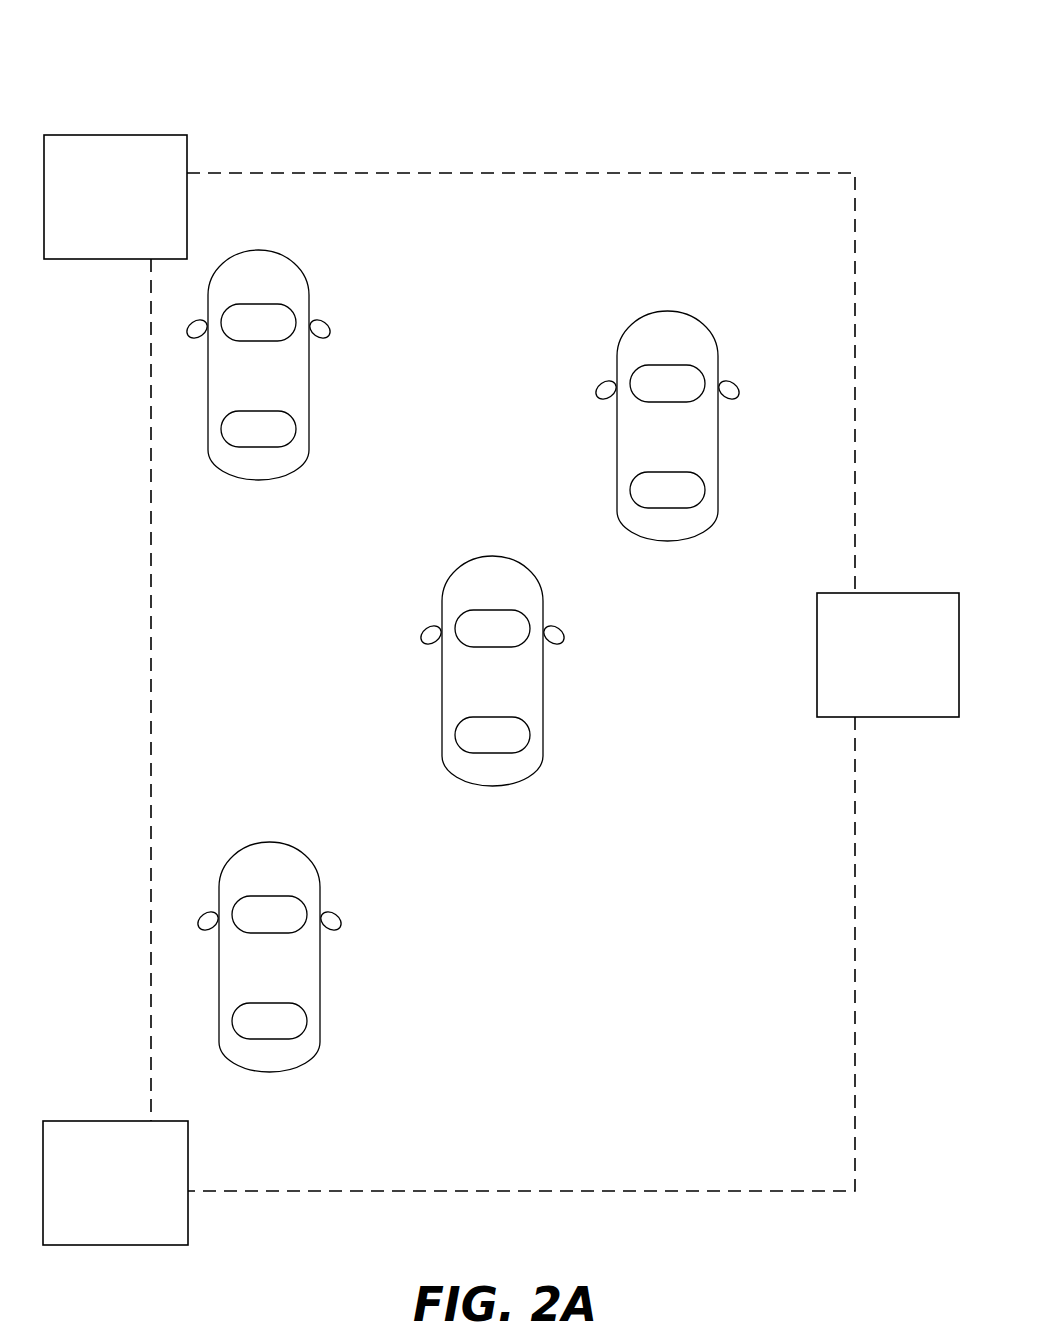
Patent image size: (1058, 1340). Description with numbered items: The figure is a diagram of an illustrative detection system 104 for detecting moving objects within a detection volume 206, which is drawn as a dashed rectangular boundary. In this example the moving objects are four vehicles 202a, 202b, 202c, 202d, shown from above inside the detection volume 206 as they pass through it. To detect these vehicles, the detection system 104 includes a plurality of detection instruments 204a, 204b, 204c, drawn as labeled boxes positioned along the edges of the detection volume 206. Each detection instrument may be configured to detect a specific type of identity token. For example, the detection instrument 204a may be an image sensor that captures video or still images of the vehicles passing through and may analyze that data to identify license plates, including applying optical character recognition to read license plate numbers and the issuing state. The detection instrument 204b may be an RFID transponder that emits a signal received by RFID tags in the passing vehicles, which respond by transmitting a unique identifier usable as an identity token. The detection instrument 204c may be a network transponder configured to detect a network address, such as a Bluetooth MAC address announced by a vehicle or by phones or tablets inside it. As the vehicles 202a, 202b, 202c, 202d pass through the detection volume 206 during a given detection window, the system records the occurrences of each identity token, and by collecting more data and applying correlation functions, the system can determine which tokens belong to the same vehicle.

The detection system 104 is at (258, 117).
The detection volume 206 is at (661, 172).
The detection instrument 204a is at (89, 239).
The detection instrument 204b is at (862, 695).
The detection instrument 204c is at (89, 1222).
The vehicle 202a is at (309, 384).
The vehicle 202b is at (718, 445).
The vehicle 202c is at (543, 690).
The vehicle 202d is at (320, 976).